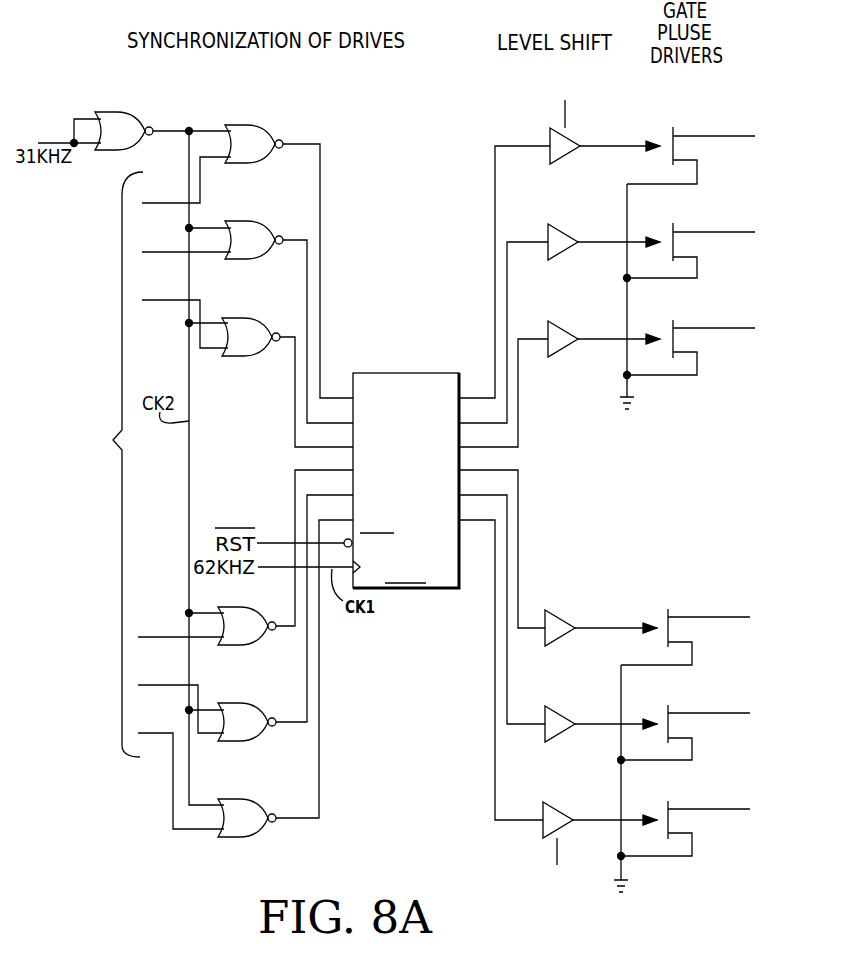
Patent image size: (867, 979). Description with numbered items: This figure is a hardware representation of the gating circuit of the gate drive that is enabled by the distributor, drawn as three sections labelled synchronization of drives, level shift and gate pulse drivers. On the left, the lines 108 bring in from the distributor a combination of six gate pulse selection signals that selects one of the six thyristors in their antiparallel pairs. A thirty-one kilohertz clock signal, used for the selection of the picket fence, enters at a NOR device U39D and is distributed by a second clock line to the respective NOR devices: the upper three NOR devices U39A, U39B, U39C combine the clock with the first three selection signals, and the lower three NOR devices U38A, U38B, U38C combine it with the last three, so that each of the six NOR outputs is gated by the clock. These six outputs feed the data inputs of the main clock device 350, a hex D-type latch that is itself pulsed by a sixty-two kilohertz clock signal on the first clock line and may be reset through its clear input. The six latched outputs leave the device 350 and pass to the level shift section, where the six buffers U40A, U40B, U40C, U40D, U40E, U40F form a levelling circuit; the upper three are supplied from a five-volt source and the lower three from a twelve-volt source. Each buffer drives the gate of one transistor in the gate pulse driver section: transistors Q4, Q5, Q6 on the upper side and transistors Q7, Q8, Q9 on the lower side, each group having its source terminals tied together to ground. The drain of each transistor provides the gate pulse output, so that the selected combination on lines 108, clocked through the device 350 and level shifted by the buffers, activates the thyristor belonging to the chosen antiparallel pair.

The lines 108 is at (153, 493).
The main clock 350 is at (408, 589).
The NOR gate U39D is at (124, 110).
The NOR gate U39A is at (251, 126).
The NOR gate U39B is at (240, 222).
The NOR gate U39C is at (242, 320).
The NOR gate U38A is at (232, 608).
The NOR gate U38B is at (237, 708).
The NOR gate U38C is at (243, 800).
The level shift buffer U40A is at (552, 131).
The level shift buffer U40B is at (556, 225).
The level shift buffer U40C is at (555, 324).
The level shift buffer U40D is at (558, 610).
The level shift buffer U40E is at (553, 715).
The level shift buffer U40F is at (562, 803).
The gate pulse driver transistor Q4 is at (662, 135).
The gate pulse driver transistor Q5 is at (662, 231).
The gate pulse driver transistor Q6 is at (661, 327).
The gate pulse driver transistor Q7 is at (659, 614).
The gate pulse driver transistor Q8 is at (660, 712).
The gate pulse driver transistor Q9 is at (660, 808).